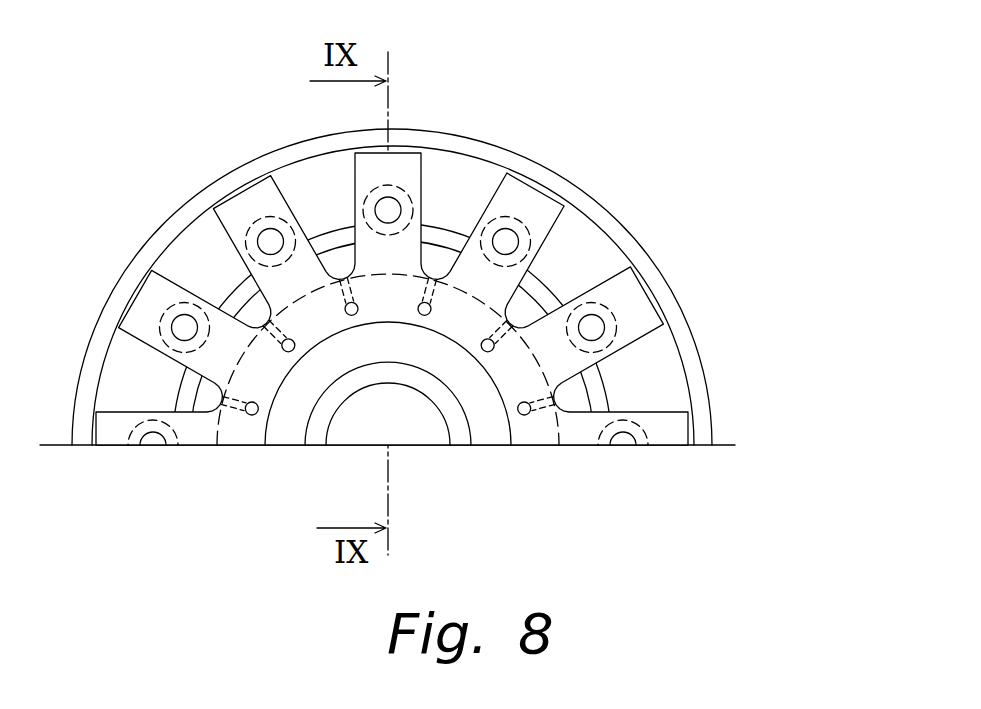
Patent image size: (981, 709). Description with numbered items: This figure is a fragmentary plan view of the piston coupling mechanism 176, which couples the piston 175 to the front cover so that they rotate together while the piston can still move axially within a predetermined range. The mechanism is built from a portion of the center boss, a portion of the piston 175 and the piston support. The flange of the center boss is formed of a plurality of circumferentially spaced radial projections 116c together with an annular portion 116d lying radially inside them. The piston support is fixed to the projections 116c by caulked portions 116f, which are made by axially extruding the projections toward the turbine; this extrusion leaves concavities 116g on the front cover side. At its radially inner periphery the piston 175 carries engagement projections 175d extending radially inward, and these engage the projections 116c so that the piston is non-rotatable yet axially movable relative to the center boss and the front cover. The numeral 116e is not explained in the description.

The piston 175 is at (443, 279).
The engagement projections 175d is at (447, 203).
The radial projections 116c is at (520, 203).
The piston coupling mechanism 176 is at (602, 189).
The concavities 116g is at (210, 186).
The caulked portions 116f is at (270, 240).
The small hole 116e is at (521, 414).
The annular portion 116d is at (538, 430).